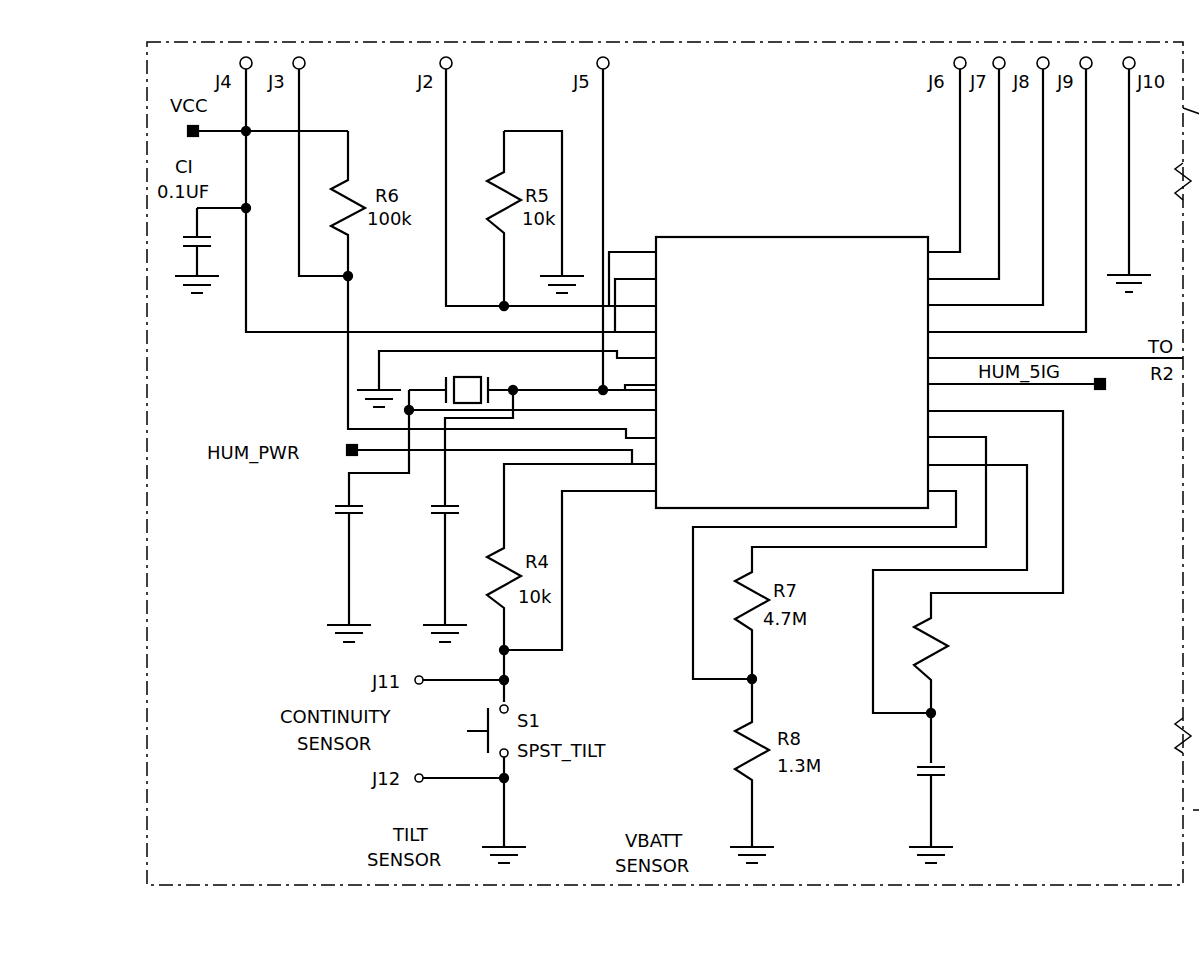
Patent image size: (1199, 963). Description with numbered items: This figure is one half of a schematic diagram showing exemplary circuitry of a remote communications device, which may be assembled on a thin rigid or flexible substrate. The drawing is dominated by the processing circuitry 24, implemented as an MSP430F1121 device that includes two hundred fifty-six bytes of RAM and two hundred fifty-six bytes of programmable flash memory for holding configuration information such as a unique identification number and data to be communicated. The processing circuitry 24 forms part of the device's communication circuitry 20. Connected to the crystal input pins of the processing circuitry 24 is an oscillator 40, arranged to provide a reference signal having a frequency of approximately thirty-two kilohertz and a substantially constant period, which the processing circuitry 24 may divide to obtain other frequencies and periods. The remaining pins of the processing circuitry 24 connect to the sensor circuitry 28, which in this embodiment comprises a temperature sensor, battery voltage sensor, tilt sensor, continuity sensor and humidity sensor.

The communication circuitry 20 is at (698, 148).
The processing circuitry 24 is at (901, 235).
The sensor circuitry 28 is at (1082, 712).
The oscillator 40 is at (396, 371).